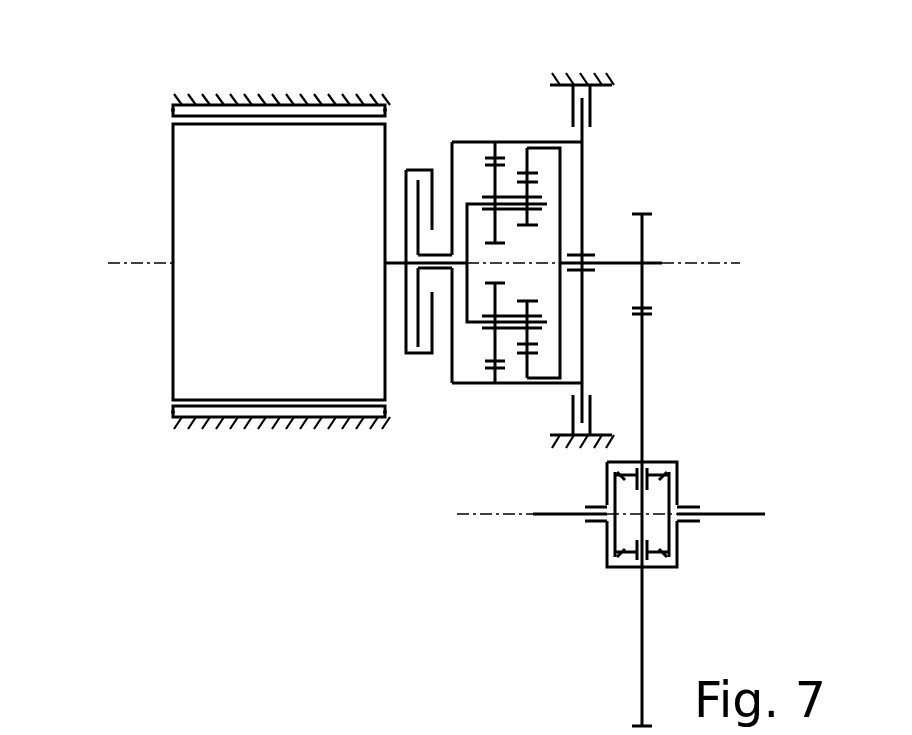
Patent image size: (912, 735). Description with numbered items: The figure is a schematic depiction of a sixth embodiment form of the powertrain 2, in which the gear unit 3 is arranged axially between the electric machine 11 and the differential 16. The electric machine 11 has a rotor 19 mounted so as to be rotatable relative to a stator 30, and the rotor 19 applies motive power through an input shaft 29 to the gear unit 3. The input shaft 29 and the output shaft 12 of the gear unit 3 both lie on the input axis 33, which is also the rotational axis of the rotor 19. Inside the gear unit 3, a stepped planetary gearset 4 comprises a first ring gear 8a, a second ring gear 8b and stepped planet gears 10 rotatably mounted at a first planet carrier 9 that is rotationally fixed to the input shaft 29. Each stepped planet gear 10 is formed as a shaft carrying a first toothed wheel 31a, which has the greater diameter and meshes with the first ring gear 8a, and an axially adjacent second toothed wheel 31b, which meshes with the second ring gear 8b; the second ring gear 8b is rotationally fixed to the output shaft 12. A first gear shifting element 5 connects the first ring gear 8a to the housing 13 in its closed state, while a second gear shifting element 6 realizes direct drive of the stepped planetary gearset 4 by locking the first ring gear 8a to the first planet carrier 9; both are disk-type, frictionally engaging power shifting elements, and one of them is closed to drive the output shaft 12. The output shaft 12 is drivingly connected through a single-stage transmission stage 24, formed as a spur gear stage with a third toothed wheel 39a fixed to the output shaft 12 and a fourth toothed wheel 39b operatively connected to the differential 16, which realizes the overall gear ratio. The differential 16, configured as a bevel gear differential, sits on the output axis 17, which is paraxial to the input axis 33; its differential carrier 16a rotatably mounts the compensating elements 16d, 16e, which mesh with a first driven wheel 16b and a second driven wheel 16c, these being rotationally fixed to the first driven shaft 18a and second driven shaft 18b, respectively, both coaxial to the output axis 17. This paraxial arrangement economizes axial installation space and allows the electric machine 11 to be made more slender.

The powertrain 2 is at (108, 118).
The gear unit 3 is at (472, 405).
The stepped planetary gearset 4 is at (516, 150).
The first gear shifting element 5 is at (610, 115).
The second gear shifting element 6 is at (413, 150).
The first ring gear 8a is at (507, 158).
The second ring gear 8b is at (543, 177).
The first planet carrier 9 is at (470, 322).
The stepped planet gear 10 is at (515, 330).
The electric machine 11 is at (160, 443).
The output shaft 12 is at (617, 258).
The housing 13 is at (206, 96).
The differential 16 is at (608, 580).
The differential carrier 16a is at (657, 462).
The first driven wheel 16b is at (614, 493).
The second driven wheel 16c is at (668, 500).
The compensating element 16d is at (661, 470).
The compensating element 16e is at (657, 557).
The output axis 17 is at (460, 516).
The first driven shaft 18a is at (535, 516).
The second driven shaft 18b is at (702, 512).
The rotor 19 is at (183, 160).
The transmission stage 24 is at (674, 205).
The input shaft 29 is at (397, 255).
The stator 30 is at (172, 112).
The first toothed wheel 31a is at (483, 175).
The second toothed wheel 31b is at (540, 182).
The input axis 33 is at (140, 263).
The third toothed wheel 39a is at (652, 212).
The fourth toothed wheel 39b is at (652, 316).